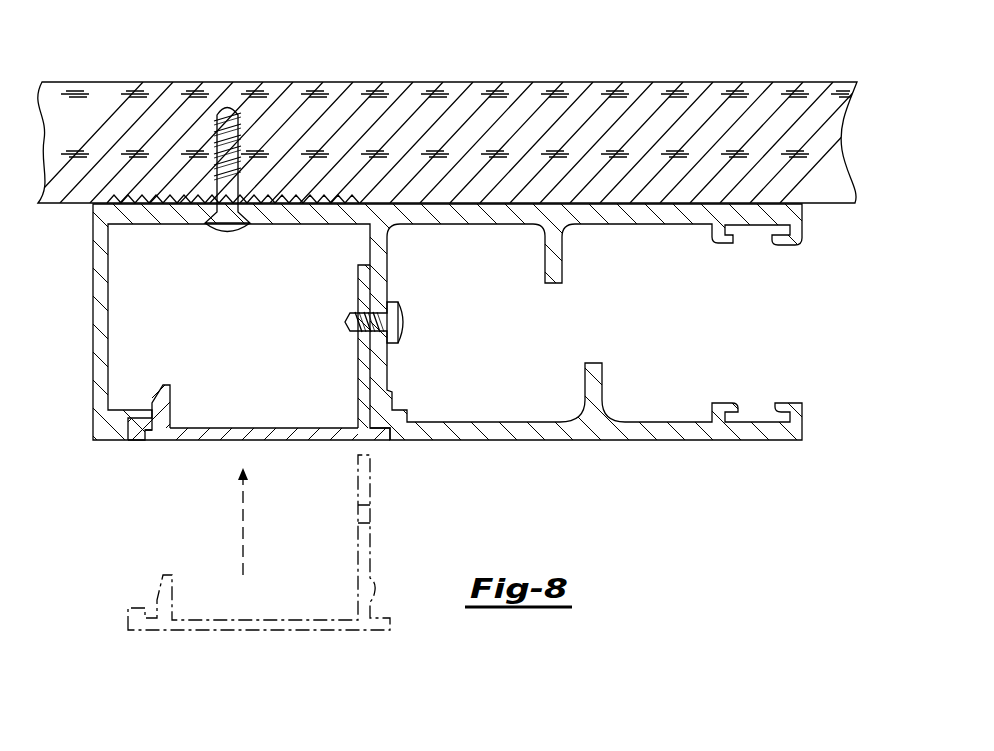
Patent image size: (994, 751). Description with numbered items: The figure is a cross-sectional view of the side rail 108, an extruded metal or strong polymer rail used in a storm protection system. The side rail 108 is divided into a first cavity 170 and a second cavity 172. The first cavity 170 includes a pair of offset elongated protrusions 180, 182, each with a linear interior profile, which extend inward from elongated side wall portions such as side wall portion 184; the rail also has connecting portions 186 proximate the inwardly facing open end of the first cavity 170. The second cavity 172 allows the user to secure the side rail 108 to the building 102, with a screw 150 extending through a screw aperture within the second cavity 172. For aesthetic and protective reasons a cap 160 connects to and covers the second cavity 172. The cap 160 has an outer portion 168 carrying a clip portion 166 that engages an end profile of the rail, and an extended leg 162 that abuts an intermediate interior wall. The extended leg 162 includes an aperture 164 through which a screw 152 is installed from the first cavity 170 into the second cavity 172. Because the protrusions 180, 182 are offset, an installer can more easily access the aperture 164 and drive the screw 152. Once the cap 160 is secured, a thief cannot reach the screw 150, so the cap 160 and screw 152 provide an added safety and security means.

The building 102 is at (416, 128).
The side rail 108 is at (75, 329).
The screw 150 is at (226, 107).
The screw 152 is at (405, 330).
The cap 160 is at (261, 475).
The extended leg 162 is at (362, 363).
The aperture 164 is at (362, 300).
The clip portion 166 is at (163, 388).
The outer portion 168 is at (275, 426).
The first cavity 170 is at (658, 326).
The second cavity 172 is at (246, 329).
The offset elongated protrusion 180 is at (548, 276).
The offset elongated protrusion 182 is at (600, 375).
The elongated side wall portion 184 is at (598, 438).
The connecting portions 186 is at (778, 246).